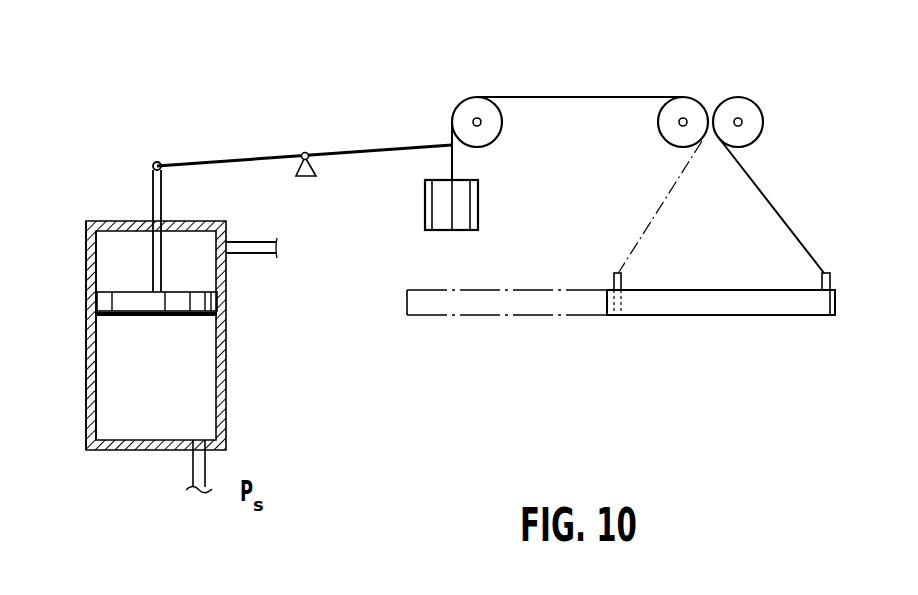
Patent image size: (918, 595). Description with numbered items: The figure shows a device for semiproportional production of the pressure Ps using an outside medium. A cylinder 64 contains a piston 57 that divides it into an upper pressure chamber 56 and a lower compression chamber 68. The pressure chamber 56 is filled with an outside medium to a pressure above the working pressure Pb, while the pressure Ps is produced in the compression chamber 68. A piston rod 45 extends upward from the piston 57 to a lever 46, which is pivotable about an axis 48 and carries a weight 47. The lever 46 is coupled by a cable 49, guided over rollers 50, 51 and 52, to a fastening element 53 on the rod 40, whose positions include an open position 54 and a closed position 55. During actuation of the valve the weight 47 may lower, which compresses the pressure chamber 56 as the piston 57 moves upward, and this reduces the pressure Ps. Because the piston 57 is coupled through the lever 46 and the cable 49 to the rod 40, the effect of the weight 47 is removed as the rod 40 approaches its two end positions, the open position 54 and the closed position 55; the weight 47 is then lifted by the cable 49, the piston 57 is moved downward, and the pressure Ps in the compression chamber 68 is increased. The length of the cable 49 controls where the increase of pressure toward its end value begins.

The rod 40 is at (714, 305).
The piston rod 45 is at (152, 194).
The lever 46 is at (238, 158).
The weight 47 is at (480, 216).
The axis 48 is at (306, 151).
The cable 49 is at (554, 95).
The roller 50 is at (466, 103).
The roller 51 is at (684, 103).
The roller 52 is at (745, 105).
The fastening element 53 is at (832, 280).
The open position 54 is at (813, 305).
The closed position 55 is at (489, 305).
The pressure chamber 56 is at (116, 257).
The piston 57 is at (97, 300).
The cylinder 64 is at (226, 389).
The compression chamber 68 is at (113, 373).